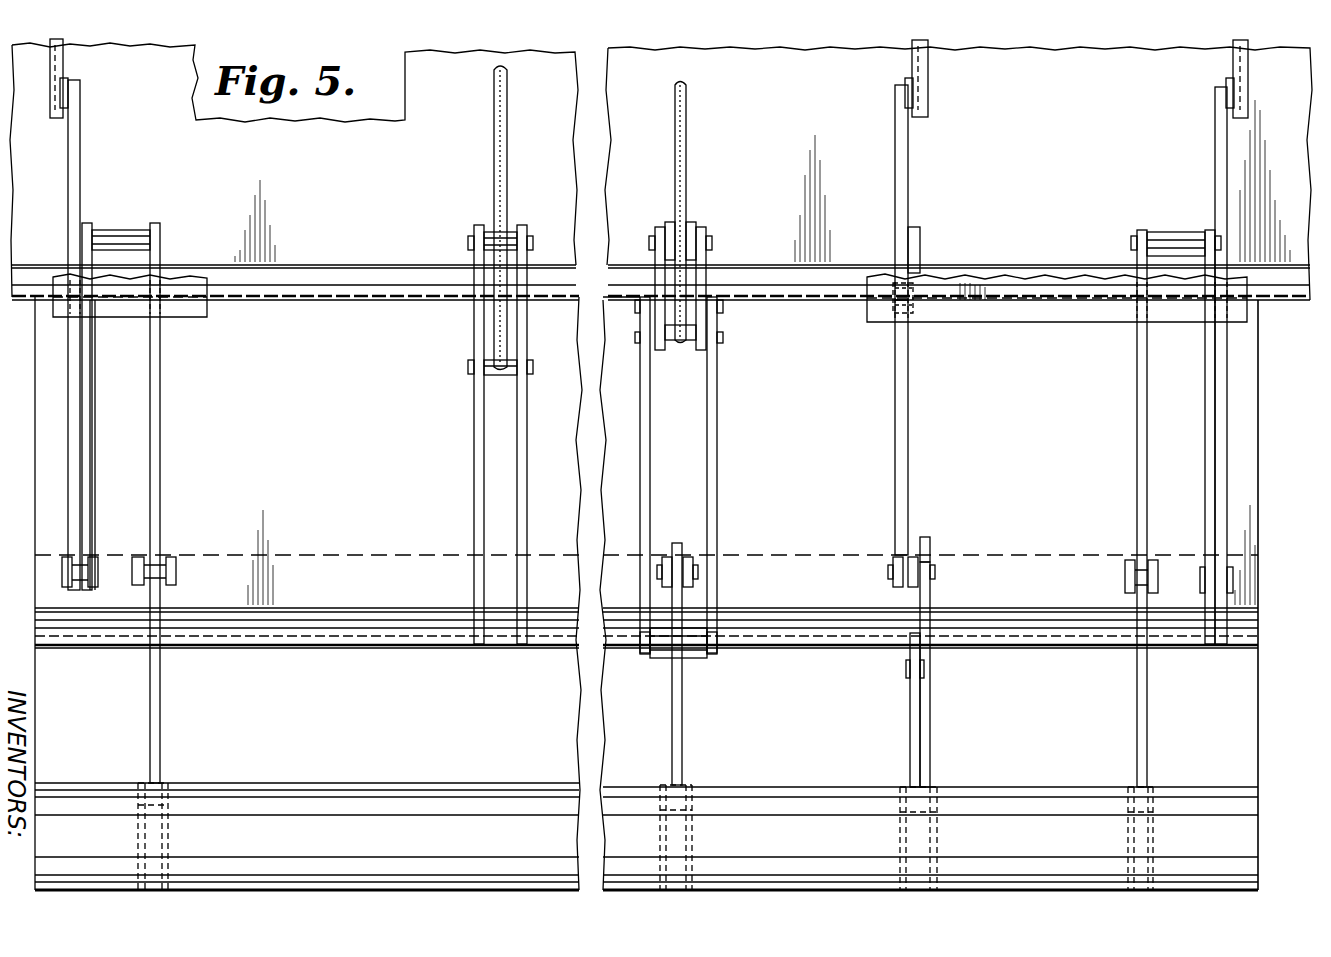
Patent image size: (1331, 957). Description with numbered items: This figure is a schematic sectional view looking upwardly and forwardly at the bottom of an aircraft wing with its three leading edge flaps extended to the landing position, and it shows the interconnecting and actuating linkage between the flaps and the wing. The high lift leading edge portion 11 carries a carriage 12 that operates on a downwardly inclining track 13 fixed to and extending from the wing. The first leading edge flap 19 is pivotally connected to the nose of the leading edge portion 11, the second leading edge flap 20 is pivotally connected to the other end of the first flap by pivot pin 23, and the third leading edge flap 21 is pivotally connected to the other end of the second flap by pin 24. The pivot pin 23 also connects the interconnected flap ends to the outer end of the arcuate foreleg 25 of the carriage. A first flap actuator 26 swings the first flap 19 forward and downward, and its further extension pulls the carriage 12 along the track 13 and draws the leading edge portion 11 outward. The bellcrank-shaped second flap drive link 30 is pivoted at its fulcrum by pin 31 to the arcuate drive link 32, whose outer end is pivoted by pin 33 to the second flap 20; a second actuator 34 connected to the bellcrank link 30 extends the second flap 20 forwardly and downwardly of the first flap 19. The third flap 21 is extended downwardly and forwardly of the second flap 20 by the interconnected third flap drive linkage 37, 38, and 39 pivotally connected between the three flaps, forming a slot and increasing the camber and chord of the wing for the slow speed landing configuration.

The high lift leading edge portion 11 is at (1075, 156).
The carriage 12 is at (908, 188).
The track 13 is at (63, 63).
The first leading edge flap 19 is at (935, 455).
The second leading edge flap 20 is at (1057, 726).
The third leading edge flap 21 is at (646, 836).
The pivot pin 23 is at (920, 290).
The pin 24 is at (692, 800).
The arcuate foreleg 25 is at (895, 428).
The first flap actuator 26 is at (494, 163).
The second flap drive link 30 is at (706, 258).
The pin 31 is at (723, 305).
The arcuate drive link 32 is at (718, 433).
The pin 33 is at (717, 652).
The second actuator 34 is at (686, 165).
The third flap drive linkage 37 is at (920, 745).
The third flap drive linkage 38 is at (930, 605).
The third flap drive linkage 39 is at (930, 557).